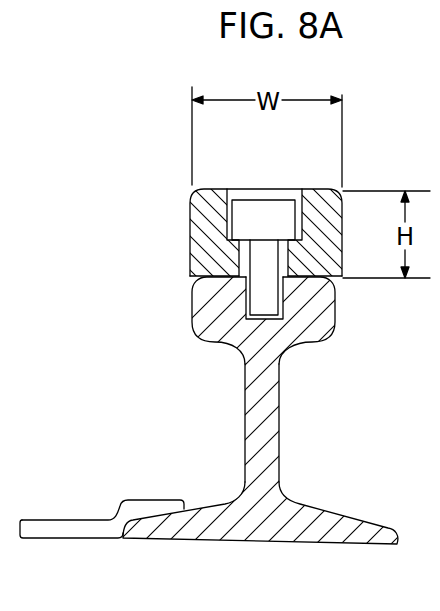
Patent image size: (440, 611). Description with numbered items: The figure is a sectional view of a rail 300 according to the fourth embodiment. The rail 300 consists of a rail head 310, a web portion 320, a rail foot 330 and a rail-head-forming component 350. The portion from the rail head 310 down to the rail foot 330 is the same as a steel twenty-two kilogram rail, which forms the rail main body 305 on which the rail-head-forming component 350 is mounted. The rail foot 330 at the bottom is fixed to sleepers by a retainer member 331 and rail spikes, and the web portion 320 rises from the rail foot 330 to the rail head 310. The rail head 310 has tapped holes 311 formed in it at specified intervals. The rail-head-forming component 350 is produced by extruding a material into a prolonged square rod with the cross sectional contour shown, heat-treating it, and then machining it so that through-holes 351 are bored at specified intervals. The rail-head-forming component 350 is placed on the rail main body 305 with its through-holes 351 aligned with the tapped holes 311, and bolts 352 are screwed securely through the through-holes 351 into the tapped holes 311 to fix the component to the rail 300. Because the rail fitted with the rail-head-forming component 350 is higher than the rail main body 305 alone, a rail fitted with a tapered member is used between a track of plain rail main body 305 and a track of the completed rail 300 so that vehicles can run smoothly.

The rail 300 is at (168, 182).
The rail main body 305 is at (232, 383).
The rail head 310 is at (203, 295).
The tapped hole 311 is at (333, 312).
The web portion 320 is at (282, 375).
The rail foot 330 is at (343, 528).
The retainer member 331 is at (138, 508).
The rail-head-forming component 350 is at (207, 217).
The through-hole 351 is at (290, 195).
The bolt 352 is at (247, 220).